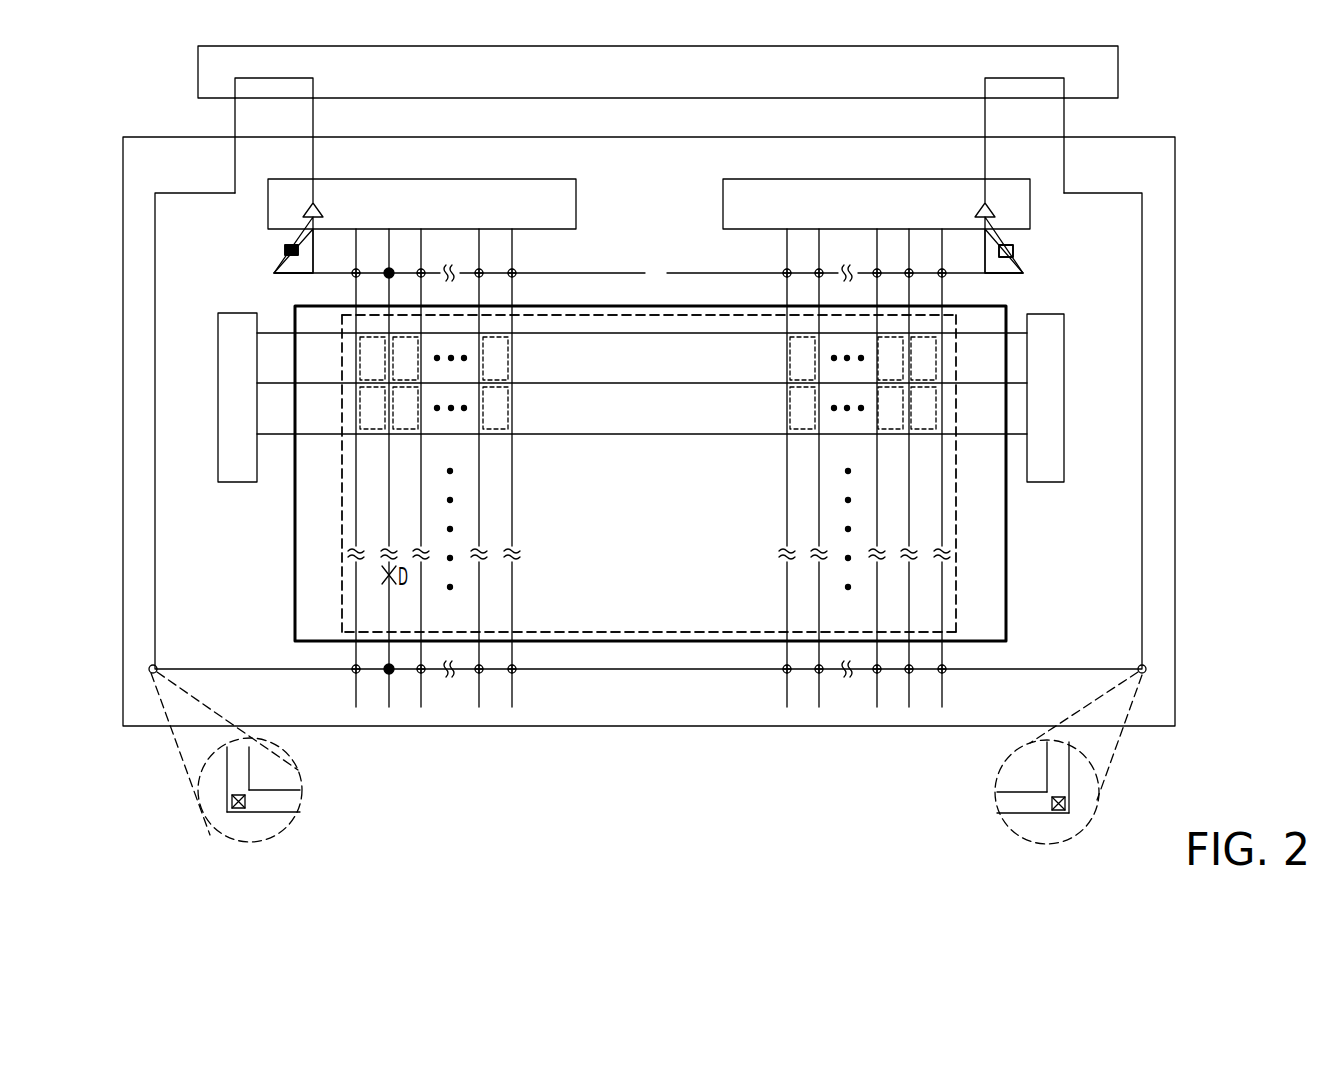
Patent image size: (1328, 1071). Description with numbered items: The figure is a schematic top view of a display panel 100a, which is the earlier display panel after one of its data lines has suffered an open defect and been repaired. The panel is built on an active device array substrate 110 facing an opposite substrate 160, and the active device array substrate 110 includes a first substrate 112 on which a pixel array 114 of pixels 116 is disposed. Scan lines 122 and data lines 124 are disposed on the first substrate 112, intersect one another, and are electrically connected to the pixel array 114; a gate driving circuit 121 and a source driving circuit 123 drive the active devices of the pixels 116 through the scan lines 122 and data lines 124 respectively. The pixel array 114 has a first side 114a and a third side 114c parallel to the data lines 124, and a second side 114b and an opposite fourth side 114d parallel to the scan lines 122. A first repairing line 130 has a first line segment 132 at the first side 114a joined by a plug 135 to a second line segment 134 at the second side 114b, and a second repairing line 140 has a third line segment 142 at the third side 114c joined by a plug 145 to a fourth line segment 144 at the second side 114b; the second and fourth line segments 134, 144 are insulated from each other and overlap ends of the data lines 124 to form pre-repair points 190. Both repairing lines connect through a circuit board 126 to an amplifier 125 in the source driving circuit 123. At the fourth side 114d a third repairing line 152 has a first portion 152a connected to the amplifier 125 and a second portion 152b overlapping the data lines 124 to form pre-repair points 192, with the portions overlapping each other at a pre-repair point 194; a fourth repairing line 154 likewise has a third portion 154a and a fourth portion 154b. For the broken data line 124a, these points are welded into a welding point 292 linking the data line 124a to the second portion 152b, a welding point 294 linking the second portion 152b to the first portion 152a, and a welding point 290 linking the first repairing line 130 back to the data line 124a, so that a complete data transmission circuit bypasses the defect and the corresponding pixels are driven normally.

The display panel 100a is at (1262, 736).
The active device array substrate 110 is at (1175, 655).
The first substrate 112 is at (647, 720).
The pixel array 114 is at (341, 572).
The first side 114a is at (338, 513).
The second side 114b is at (593, 633).
The third side 114c is at (965, 513).
The fourth side 114d is at (595, 314).
The pixels 116 is at (358, 417).
The gate driving circuit 121 is at (235, 482).
The scan lines 122 is at (322, 334).
The source driving circuit 123 is at (268, 206).
The data lines 124 is at (357, 523).
The broken data line 124a is at (389, 523).
The amplifier 125 is at (323, 210).
The circuit board 126 is at (198, 74).
The first repairing line 130 is at (165, 795).
The first line segment 132 is at (147, 657).
The second line segment 134 is at (190, 671).
The plug 135 is at (238, 810).
The second repairing line 140 is at (1180, 795).
The third line segment 142 is at (1147, 657).
The fourth line segment 144 is at (1135, 671).
The plug 145 is at (1058, 812).
The third repairing line 152 is at (204, 246).
The first portion 152a is at (285, 250).
The second portion 152b is at (292, 262).
The fourth repairing line 154 is at (1094, 246).
The third portion 154a is at (996, 233).
The fourth portion 154b is at (1010, 266).
The opposite substrate 160 is at (1006, 605).
The pre-repair points 190 is at (354, 673).
The pre-repair points 192 is at (360, 269).
The pre-repair point 194 is at (999, 251).
The welding point 290 is at (390, 674).
The welding point 292 is at (392, 268).
The welding point 294 is at (298, 249).